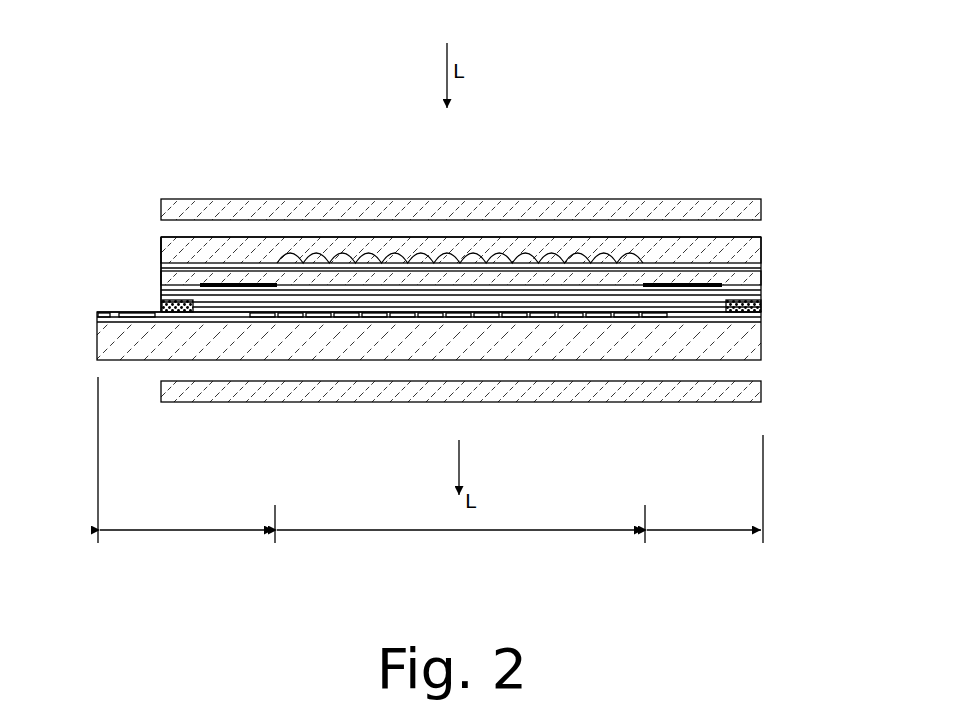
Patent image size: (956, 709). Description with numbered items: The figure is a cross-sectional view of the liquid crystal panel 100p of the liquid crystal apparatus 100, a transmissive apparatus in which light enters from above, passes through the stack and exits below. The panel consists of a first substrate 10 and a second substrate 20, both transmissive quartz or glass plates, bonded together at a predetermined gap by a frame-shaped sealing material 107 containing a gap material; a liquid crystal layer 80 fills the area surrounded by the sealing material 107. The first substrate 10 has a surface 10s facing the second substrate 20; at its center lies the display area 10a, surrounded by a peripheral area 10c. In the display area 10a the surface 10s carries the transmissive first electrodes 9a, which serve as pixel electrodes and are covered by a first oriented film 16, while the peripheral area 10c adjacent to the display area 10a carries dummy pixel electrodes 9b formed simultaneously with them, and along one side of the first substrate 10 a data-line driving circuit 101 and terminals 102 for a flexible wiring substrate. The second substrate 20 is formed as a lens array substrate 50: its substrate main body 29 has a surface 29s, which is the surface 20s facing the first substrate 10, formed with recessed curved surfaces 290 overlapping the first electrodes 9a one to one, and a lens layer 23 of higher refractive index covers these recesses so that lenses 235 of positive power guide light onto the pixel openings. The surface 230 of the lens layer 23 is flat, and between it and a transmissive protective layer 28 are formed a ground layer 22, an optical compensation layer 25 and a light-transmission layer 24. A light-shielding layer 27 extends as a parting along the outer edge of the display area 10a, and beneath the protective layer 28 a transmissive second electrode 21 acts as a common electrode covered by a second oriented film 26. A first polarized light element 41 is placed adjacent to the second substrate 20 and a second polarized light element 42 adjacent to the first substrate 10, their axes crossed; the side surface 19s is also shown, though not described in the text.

The liquid crystal apparatus 100 is at (728, 96).
The liquid crystal panel 100p is at (149, 248).
The first substrate 10 is at (768, 334).
The surface 10s is at (727, 323).
The display area 10a is at (460, 534).
The peripheral area 10c is at (430, 470).
The data-line driving circuit 101 is at (160, 316).
The terminals 102 is at (107, 313).
The sealing material 107 is at (182, 307).
The first electrodes 9a is at (487, 317).
The dummy pixel electrodes 9b is at (267, 318).
The first oriented film 16 is at (392, 292).
The second oriented film 26 is at (543, 300).
The liquid crystal layer 80 is at (565, 305).
The side surface 19s is at (212, 323).
The second substrate 20 is at (766, 249).
The lens array substrate 50 is at (443, 323).
The surface 20s is at (461, 188).
The surface 29s is at (658, 263).
The substrate main body 29 is at (700, 255).
The recessed curved surfaces 290 is at (485, 263).
The lens layer 23 is at (345, 262).
The lenses 235 is at (459, 243).
The surface 230 is at (315, 283).
The light-shielding layer 27 is at (269, 276).
The protective layer 28 is at (400, 290).
The second electrode 21 is at (520, 297).
The ground layer 22 is at (461, 195).
The light-transmission layer 24 is at (461, 207).
The optical compensation layer 25 is at (603, 270).
The first polarized light element 41 is at (753, 210).
The second polarized light element 42 is at (755, 393).